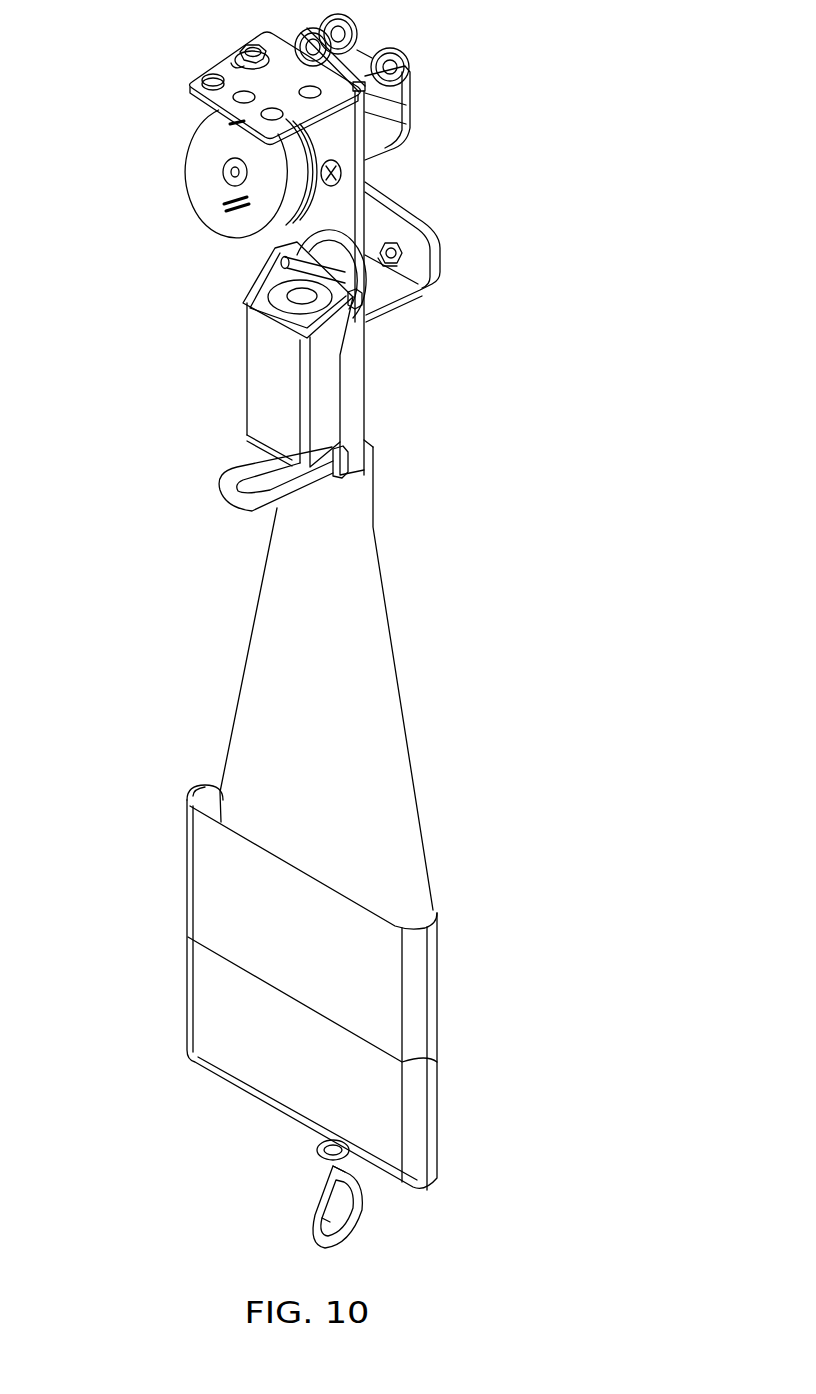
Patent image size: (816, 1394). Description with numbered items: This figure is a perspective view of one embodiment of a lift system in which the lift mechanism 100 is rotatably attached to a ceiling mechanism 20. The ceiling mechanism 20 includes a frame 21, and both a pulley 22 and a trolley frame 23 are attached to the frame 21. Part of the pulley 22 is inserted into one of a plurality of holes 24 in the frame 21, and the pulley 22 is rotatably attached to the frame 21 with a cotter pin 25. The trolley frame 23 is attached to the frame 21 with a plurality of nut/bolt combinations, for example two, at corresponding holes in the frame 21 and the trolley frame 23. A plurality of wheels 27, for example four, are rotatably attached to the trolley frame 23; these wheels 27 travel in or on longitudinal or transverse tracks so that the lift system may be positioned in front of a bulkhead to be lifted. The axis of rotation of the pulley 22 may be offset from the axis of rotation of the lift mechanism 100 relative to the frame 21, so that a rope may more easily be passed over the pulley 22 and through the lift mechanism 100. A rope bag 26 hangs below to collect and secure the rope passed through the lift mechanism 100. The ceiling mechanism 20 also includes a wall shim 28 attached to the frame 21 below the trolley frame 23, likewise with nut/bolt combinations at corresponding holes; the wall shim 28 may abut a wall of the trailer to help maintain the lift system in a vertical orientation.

The ceiling mechanism 20 is at (303, 238).
The frame 21 is at (345, 155).
The pulley 22 is at (205, 145).
The trolley frame 23 is at (387, 117).
The holes 24 is at (210, 79).
The cotter pin 25 is at (267, 50).
The rope bag 26 is at (415, 978).
The wheels 27 is at (405, 56).
The wall shim 28 is at (430, 235).
The lift mechanism 100 is at (218, 372).